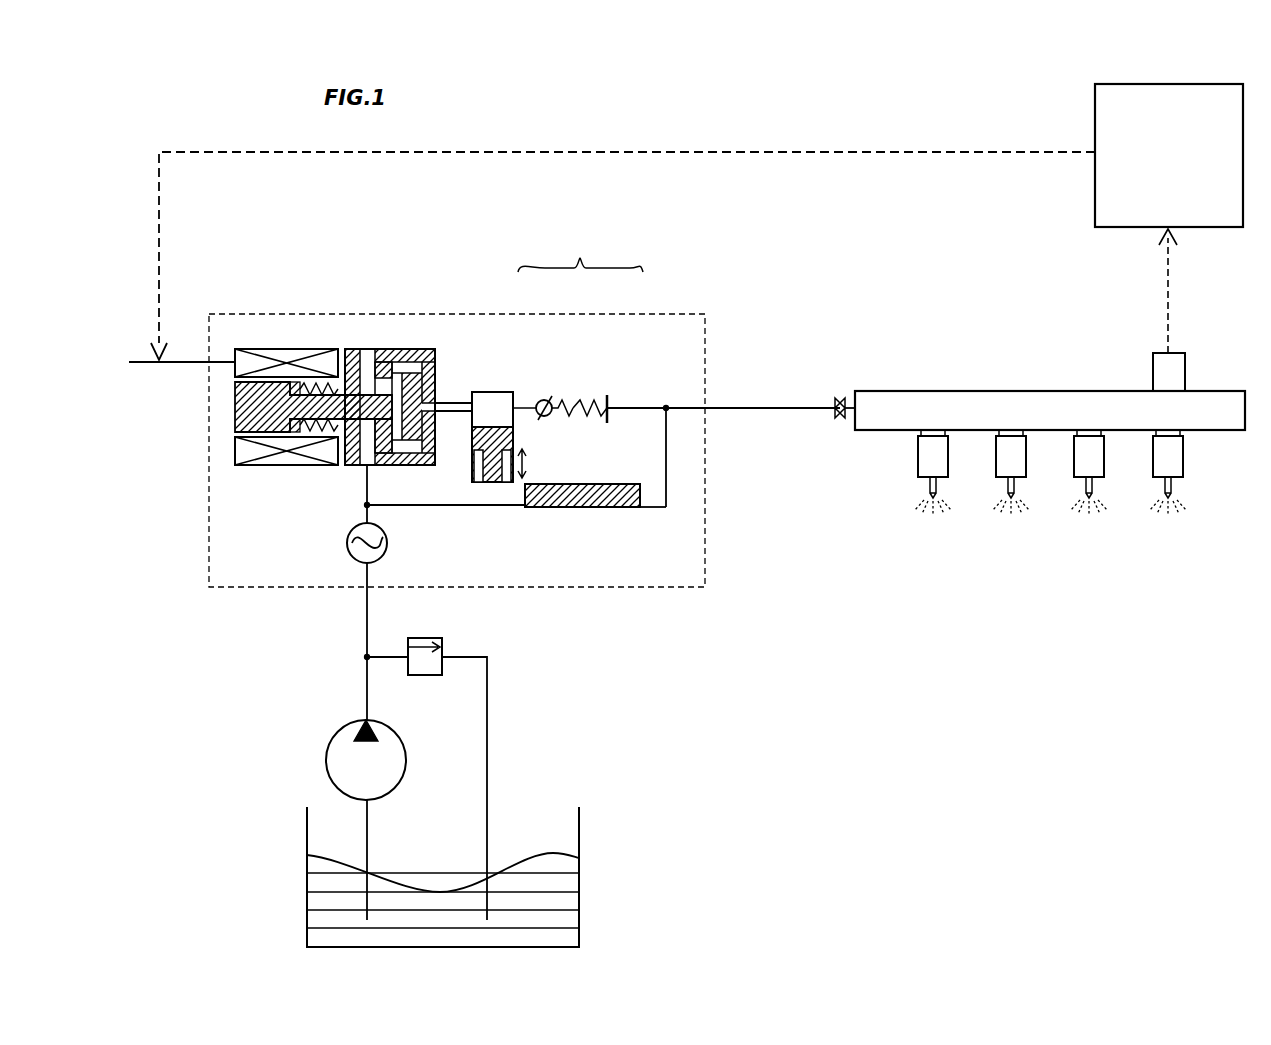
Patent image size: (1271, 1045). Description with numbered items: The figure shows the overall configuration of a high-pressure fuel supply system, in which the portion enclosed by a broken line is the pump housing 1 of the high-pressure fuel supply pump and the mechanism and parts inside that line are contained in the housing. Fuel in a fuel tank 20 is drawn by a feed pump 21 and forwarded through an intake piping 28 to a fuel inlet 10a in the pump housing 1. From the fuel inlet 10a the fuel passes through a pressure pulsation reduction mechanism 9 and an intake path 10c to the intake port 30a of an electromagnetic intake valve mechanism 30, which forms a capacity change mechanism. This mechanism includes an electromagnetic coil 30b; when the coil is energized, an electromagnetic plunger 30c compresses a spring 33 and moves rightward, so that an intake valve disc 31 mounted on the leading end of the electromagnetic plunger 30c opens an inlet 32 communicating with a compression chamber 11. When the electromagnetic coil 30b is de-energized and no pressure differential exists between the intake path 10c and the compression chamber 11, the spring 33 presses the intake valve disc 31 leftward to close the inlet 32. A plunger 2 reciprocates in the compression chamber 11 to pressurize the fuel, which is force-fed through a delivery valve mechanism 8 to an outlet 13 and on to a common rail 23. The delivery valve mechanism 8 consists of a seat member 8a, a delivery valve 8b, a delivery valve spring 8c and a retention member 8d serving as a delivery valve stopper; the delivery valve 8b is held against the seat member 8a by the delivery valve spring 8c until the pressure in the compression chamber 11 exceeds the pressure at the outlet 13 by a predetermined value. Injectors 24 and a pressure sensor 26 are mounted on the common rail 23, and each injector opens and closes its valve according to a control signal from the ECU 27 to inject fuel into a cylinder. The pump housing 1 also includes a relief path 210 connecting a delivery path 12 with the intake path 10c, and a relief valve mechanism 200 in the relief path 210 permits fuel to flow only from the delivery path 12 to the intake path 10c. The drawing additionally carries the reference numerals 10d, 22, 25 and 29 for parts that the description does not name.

The pump housing 1 is at (705, 522).
The plunger 2 is at (478, 469).
The delivery valve mechanism 8 is at (580, 251).
The seat member 8a is at (544, 398).
The delivery valve 8b is at (566, 400).
The delivery valve spring 8c is at (596, 400).
The retention member 8d is at (612, 393).
The pressure pulsation reduction mechanism 9 is at (348, 548).
The fuel inlet 10a is at (365, 588).
The intake path 10c is at (365, 513).
The fuel passage 10d is at (360, 466).
The compression chamber 11 is at (492, 402).
The delivery path 12 is at (646, 406).
The outlet 13 is at (706, 406).
The fuel tank 20 is at (581, 880).
The feed pump 21 is at (326, 758).
The pressure regulator 22 is at (445, 640).
The common rail 23 is at (908, 390).
The injectors 24 is at (1185, 460).
The throttle 25 is at (840, 397).
The pressure sensor 26 is at (1152, 371).
The ECU 27 is at (1094, 104).
The intake piping 28 is at (365, 641).
The fuel passage 29 is at (778, 406).
The electromagnetic intake valve mechanism 30 is at (257, 348).
The intake port 30a is at (374, 462).
The electromagnetic coil 30b is at (250, 452).
The electromagnetic plunger 30c is at (250, 405).
The intake valve disc 31 is at (428, 348).
The inlet 32 is at (386, 348).
The spring 33 is at (318, 348).
The relief valve mechanism 200 is at (612, 516).
The relief path 210 is at (665, 461).